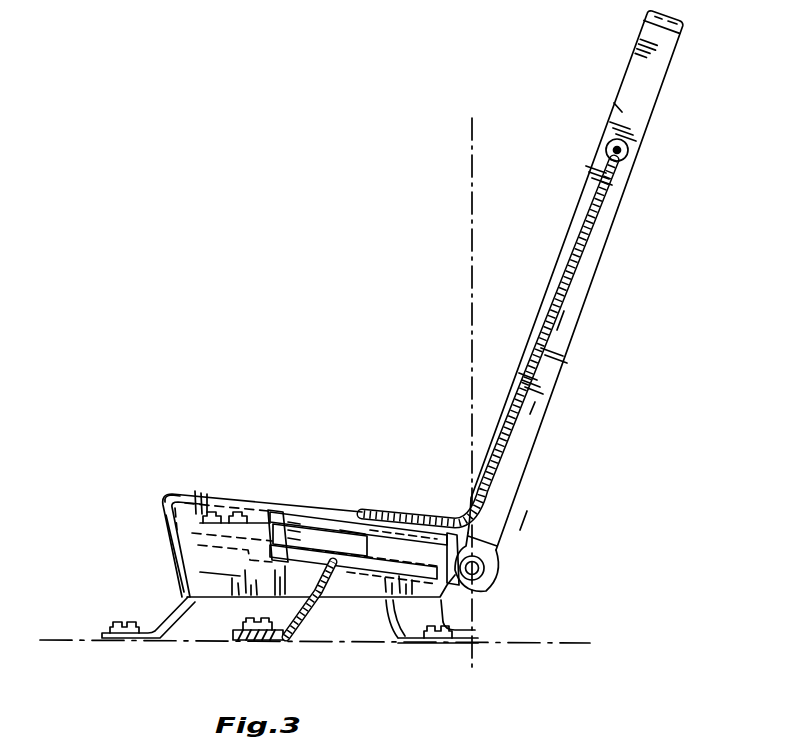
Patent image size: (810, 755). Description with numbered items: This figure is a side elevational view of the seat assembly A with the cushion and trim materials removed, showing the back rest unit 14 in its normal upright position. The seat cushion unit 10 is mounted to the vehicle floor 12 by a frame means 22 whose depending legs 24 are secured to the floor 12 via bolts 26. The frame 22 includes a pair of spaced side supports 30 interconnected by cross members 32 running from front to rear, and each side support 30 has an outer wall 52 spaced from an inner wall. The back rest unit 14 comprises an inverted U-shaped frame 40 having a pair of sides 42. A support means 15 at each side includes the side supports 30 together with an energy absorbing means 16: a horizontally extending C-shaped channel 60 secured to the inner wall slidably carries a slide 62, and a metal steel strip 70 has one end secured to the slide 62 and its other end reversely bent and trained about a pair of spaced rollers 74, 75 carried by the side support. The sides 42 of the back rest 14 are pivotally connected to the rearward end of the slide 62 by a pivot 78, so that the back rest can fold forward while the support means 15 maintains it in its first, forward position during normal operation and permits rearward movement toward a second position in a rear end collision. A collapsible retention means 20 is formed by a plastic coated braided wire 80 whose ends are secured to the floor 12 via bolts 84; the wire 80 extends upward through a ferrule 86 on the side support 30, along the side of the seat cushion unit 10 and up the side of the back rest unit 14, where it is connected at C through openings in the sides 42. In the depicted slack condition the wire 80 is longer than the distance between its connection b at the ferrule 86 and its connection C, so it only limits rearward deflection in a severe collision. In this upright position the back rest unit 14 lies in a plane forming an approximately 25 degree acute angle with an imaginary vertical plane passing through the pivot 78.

The seat cushion unit 10 is at (193, 489).
The vehicle floor 12 is at (590, 641).
The back rest unit 14 is at (658, 98).
The support means 15 is at (530, 510).
The energy absorbing means 16 is at (282, 512).
The collapsible retention means 20 is at (564, 311).
The frame means 22 is at (171, 487).
The depending legs 24 is at (113, 643).
The bolts 26 is at (114, 624).
The side supports 30 is at (183, 583).
The cross members 32 is at (153, 533).
The frame 40 is at (613, 103).
The sides 42 is at (535, 402).
The outer wall 52 is at (203, 567).
The channel 60 is at (313, 517).
The slide 62 is at (503, 563).
The metal steel strip 70 is at (334, 520).
The roller 74 is at (213, 515).
The roller 75 is at (242, 515).
The pivot 78 is at (492, 584).
The collapsible member 80 is at (586, 248).
The bolts 84 is at (232, 633).
The ferrule 86 is at (334, 600).
The seat assembly A is at (437, 364).
The connection C is at (629, 156).
The connection b is at (354, 517).
The acute angle 25 is at (582, 191).